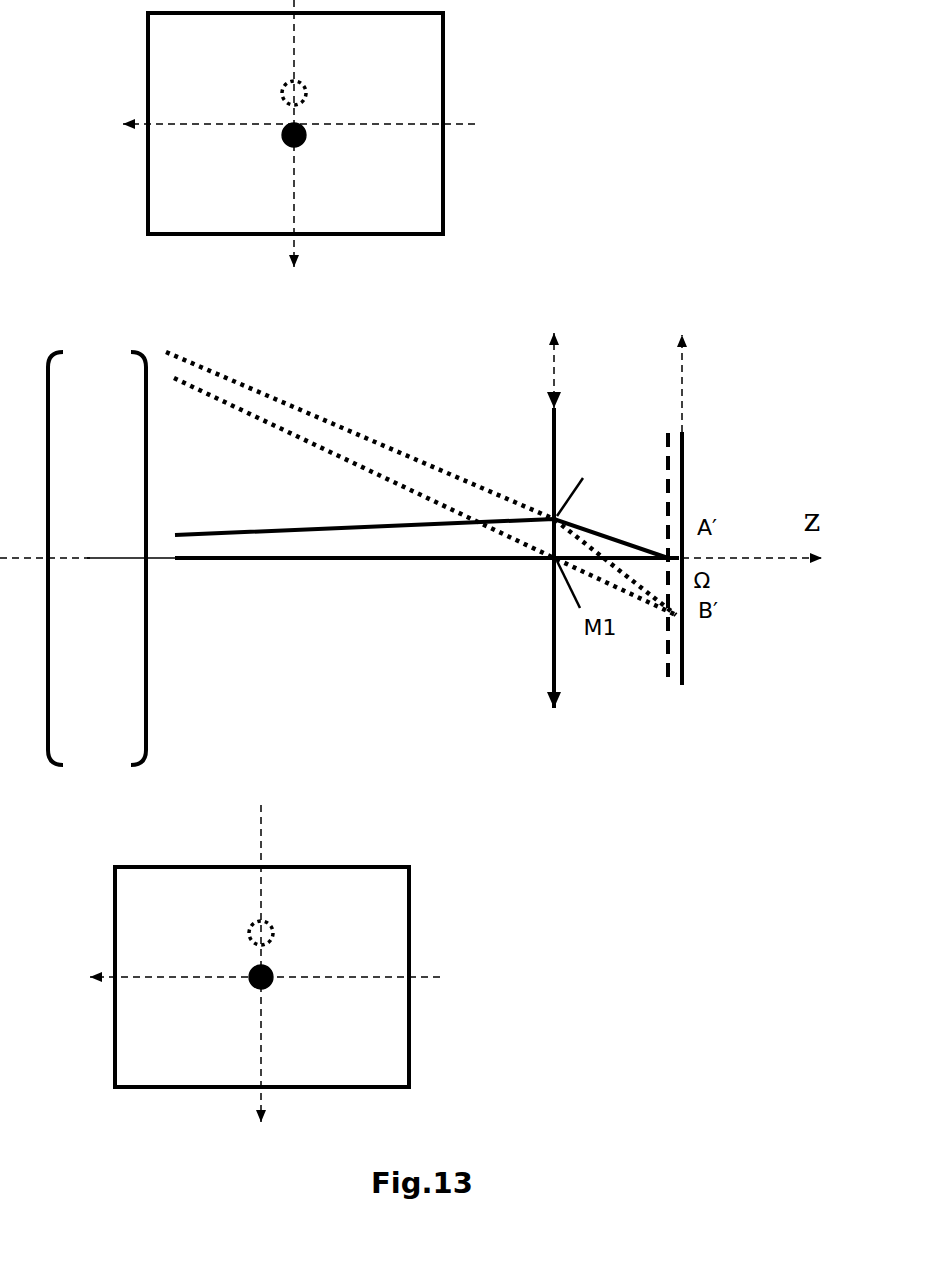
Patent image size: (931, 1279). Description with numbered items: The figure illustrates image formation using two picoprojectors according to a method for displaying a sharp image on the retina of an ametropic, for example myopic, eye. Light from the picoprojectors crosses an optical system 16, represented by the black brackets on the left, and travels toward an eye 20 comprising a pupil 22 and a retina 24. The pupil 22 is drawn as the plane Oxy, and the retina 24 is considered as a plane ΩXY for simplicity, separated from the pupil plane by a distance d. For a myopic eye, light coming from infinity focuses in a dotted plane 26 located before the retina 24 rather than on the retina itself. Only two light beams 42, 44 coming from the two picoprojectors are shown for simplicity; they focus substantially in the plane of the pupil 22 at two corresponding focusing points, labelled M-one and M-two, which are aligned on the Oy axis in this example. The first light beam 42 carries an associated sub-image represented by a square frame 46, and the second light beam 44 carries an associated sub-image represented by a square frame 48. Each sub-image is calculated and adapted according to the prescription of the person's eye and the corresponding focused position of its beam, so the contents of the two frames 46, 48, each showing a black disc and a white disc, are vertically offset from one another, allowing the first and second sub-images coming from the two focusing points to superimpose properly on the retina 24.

The optical system 16 is at (36, 775).
The eye 20 is at (616, 550).
The pupil 22 is at (552, 673).
The retina 24 is at (683, 673).
The dotted plane 26 is at (665, 432).
The first light beam 42 is at (547, 565).
The second light beam 44 is at (550, 515).
The square frame 46 is at (412, 1022).
The square frame 48 is at (450, 72).